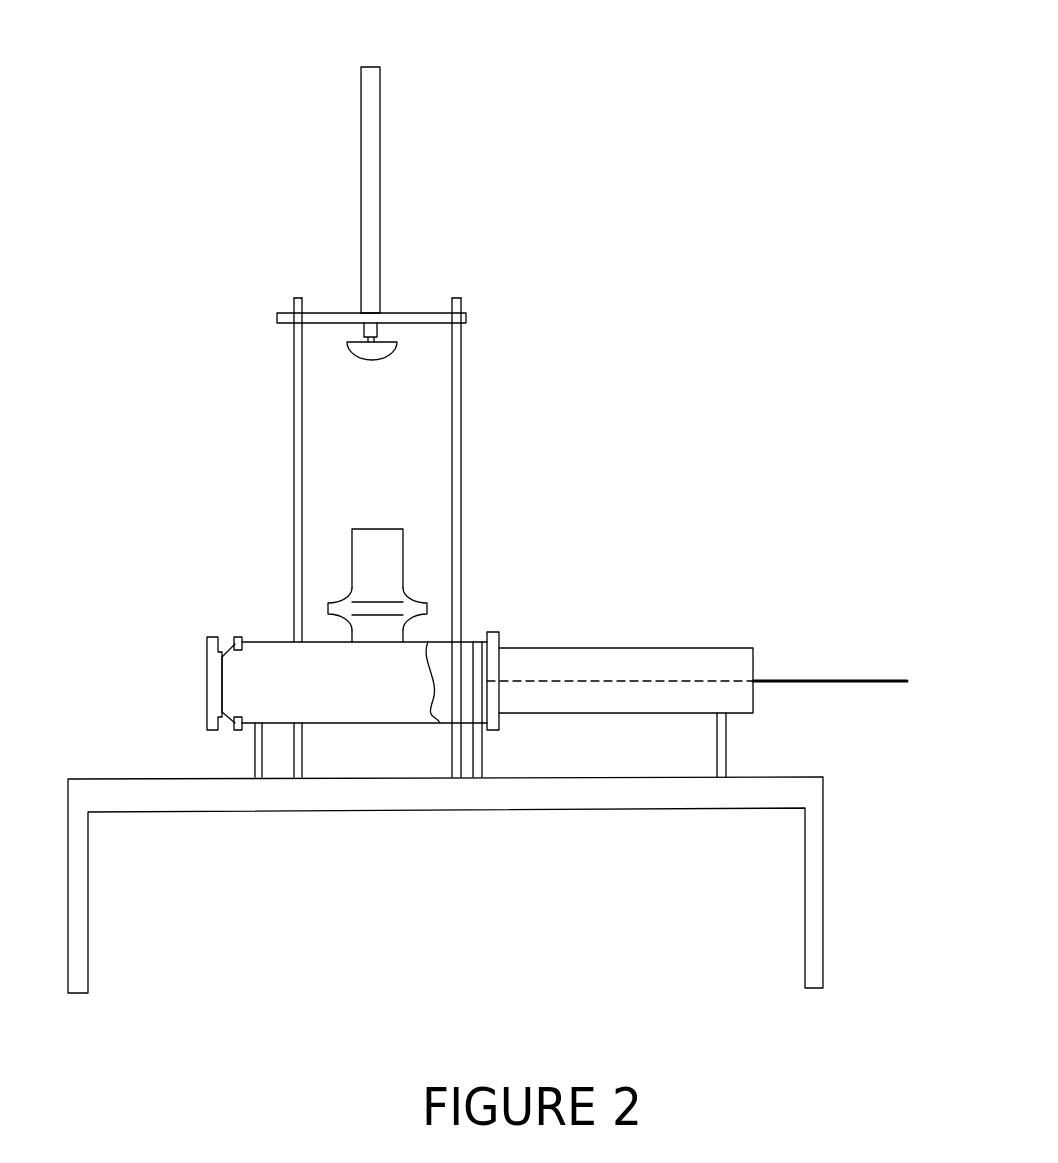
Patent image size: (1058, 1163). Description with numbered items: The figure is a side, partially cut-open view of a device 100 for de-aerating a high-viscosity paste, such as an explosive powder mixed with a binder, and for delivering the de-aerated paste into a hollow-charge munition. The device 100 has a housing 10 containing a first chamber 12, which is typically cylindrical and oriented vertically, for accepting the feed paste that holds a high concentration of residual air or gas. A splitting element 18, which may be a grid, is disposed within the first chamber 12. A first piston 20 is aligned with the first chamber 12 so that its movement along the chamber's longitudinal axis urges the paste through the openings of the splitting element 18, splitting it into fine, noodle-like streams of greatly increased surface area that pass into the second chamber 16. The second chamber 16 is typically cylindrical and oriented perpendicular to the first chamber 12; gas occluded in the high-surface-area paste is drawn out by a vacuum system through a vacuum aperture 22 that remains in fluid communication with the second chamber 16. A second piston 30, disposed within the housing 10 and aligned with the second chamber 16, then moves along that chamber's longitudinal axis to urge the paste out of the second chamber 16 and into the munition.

The device 100 is at (590, 96).
The housing 10 is at (653, 648).
The first chamber 12 is at (351, 531).
The second chamber 16 is at (237, 686).
The splitting element 18 is at (328, 608).
The first piston 20 is at (393, 355).
The vacuum aperture 22 is at (237, 637).
The second piston 30 is at (479, 657).